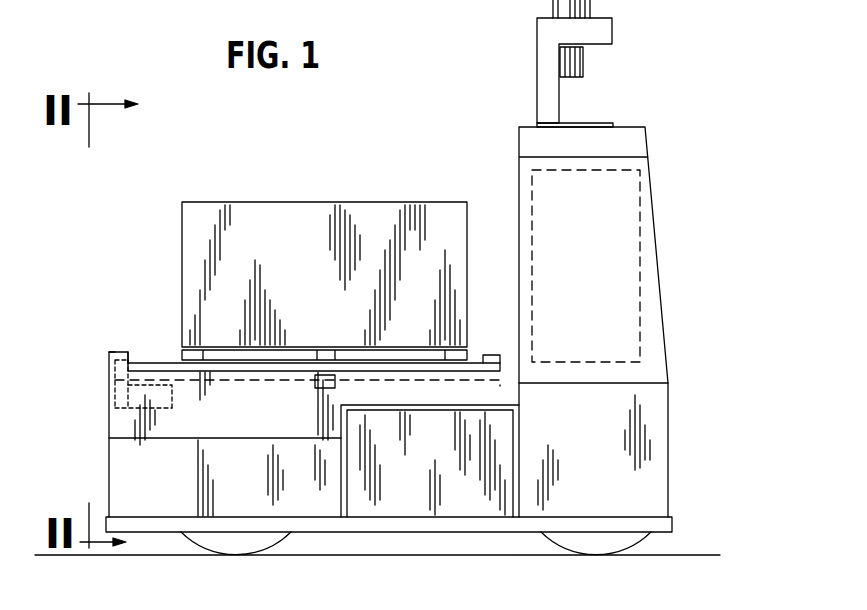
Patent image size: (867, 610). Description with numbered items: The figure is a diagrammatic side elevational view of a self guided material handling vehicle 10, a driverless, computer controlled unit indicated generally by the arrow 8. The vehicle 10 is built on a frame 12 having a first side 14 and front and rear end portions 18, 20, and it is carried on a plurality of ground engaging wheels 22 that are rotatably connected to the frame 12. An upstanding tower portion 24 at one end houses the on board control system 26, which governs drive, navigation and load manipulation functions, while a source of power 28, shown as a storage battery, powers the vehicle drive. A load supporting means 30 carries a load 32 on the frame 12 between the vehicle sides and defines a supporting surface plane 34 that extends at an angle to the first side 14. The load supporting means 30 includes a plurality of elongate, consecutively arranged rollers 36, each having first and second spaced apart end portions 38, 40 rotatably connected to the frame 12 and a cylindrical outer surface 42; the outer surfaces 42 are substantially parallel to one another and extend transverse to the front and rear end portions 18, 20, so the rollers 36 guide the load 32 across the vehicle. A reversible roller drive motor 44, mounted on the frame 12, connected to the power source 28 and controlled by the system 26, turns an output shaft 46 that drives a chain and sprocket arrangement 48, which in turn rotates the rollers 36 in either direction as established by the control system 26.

The load handling vehicle 8 is at (468, 146).
The material handling vehicle 10 is at (648, 70).
The frame 12 is at (668, 494).
The first side 14 is at (240, 481).
The front end portion 18 is at (669, 432).
The rear end portion 20 is at (109, 472).
The ground engaging wheels 22 is at (545, 546).
The tower portion 24 is at (653, 267).
The on board control system 26 is at (658, 199).
The source of power 28 is at (439, 471).
The load supporting means 30 is at (141, 352).
The load 32 is at (334, 287).
The supporting surface plane 34 is at (165, 360).
The rollers 36 is at (495, 357).
The first end portion 38 is at (500, 372).
The second end portion 40 is at (110, 353).
The cylindrical outer surface 42 is at (238, 382).
The roller drive motor 44 is at (150, 412).
The output shaft 46 is at (128, 409).
The chain and sprocket arrangement 48 is at (115, 389).